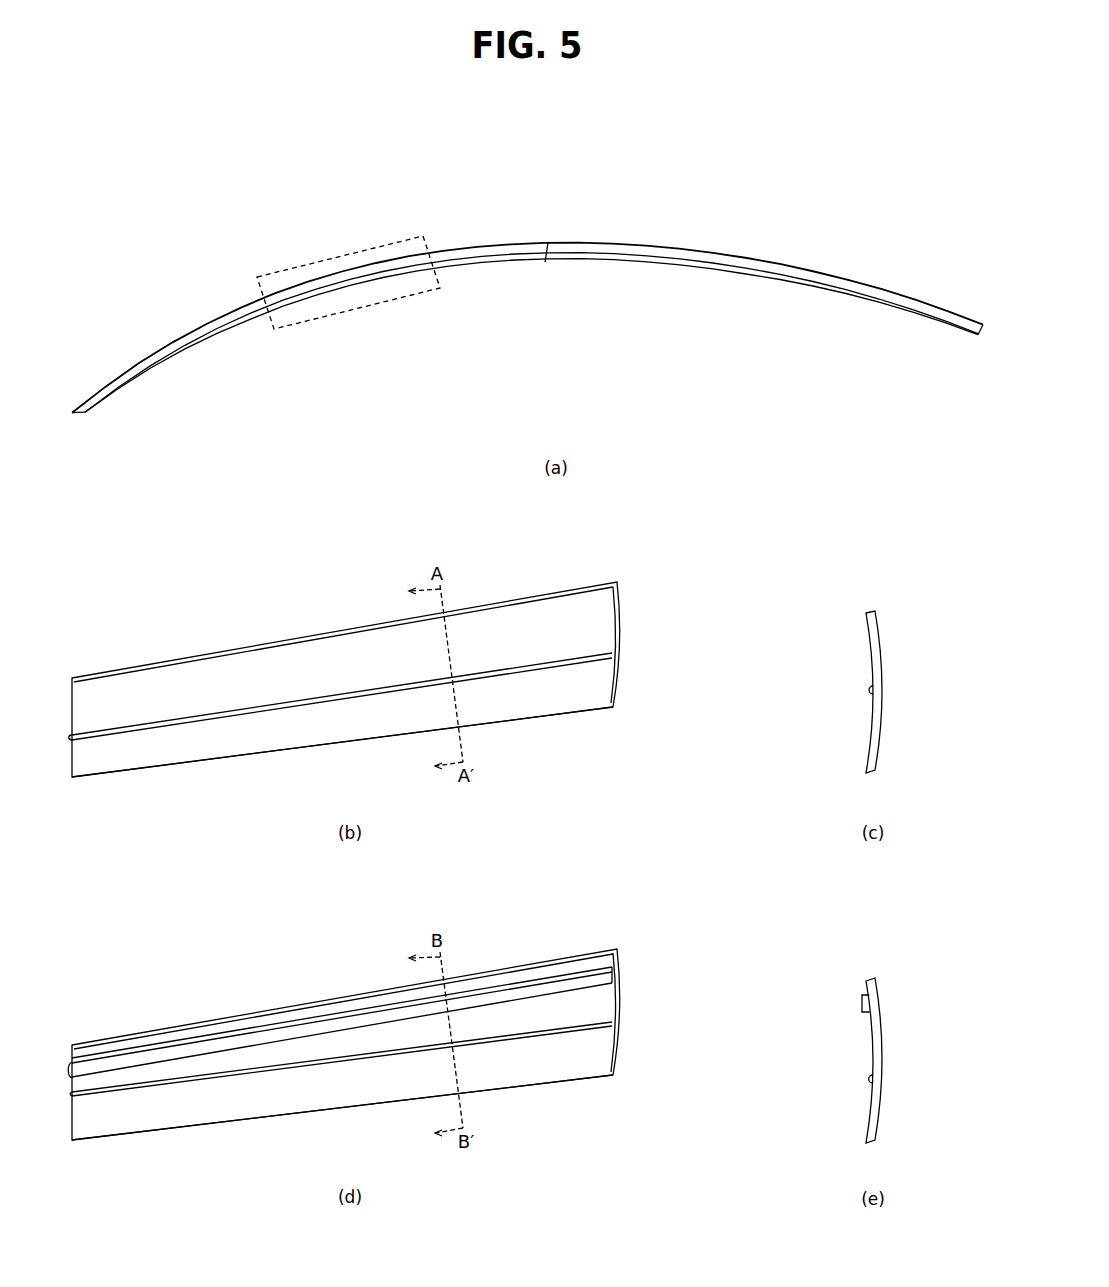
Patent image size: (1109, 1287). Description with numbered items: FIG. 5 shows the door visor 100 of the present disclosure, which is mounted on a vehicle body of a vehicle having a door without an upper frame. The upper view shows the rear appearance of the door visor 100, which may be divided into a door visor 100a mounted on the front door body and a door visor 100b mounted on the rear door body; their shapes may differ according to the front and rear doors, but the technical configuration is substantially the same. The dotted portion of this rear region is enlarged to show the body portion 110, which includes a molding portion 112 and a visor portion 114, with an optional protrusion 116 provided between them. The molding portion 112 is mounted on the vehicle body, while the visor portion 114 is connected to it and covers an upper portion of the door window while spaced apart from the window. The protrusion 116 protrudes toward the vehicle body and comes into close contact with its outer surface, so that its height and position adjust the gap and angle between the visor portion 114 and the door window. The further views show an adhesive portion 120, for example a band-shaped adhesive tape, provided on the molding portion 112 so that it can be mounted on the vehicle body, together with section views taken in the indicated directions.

The door visor 100 is at (527, 253).
The door visor mounted on front door body 100a is at (513, 247).
The door visor mounted on rear door body 100b is at (508, 148).
The body portion 110 is at (110, 615).
The molding portion 112 is at (597, 621).
The visor portion 114 is at (598, 684).
The protrusion 116 is at (610, 655).
The adhesive portion 120 is at (597, 979).